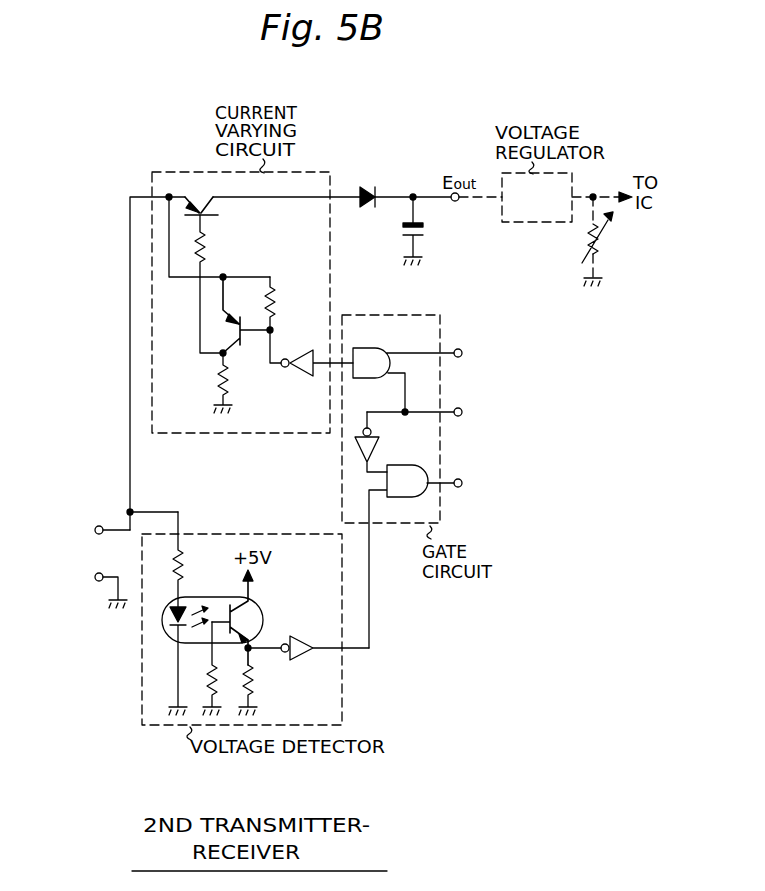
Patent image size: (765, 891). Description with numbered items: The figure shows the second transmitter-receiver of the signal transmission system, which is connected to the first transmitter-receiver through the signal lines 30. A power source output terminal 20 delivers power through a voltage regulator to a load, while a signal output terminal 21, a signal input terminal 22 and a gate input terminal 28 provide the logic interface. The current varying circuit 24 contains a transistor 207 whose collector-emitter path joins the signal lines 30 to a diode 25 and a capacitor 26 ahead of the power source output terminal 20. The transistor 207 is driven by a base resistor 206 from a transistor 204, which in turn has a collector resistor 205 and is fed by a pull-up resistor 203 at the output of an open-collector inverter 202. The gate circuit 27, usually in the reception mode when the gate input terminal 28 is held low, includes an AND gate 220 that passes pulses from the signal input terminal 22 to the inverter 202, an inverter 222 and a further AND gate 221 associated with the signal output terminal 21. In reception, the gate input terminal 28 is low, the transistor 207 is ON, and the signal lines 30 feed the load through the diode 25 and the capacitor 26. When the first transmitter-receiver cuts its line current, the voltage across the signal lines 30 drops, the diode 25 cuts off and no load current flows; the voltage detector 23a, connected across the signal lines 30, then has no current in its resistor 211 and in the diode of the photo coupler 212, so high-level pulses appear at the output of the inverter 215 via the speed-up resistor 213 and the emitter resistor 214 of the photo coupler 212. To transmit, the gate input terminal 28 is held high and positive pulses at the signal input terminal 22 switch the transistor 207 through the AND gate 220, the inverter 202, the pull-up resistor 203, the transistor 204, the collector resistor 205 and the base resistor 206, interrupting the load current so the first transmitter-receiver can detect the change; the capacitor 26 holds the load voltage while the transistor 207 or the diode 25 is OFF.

The current varying circuit 24 is at (184, 172).
The transistor 207 is at (206, 208).
The base resistor 206 is at (215, 240).
The transistor 204 is at (248, 321).
The pull-up resistor 203 is at (290, 294).
The collector resistor 205 is at (216, 378).
The open-collector inverter 202 is at (297, 378).
The diode 25 is at (364, 186).
The capacitor 26 is at (398, 238).
The power source output terminal 20 is at (461, 208).
The gate circuit 27 is at (384, 526).
The AND gate 220 is at (358, 346).
The inverter 222 is at (378, 450).
The AND gate 221 is at (417, 497).
The signal input terminal 22 is at (479, 353).
The gate input terminal 28 is at (479, 412).
The signal output terminal 21 is at (479, 483).
The signal lines 30 is at (102, 558).
The voltage detector 23a is at (265, 534).
The resistor 211 is at (195, 555).
The photo coupler 212 is at (256, 606).
The speed-up resistor 213 is at (224, 682).
The emitter resistor 214 is at (264, 672).
The inverter 215 is at (297, 640).